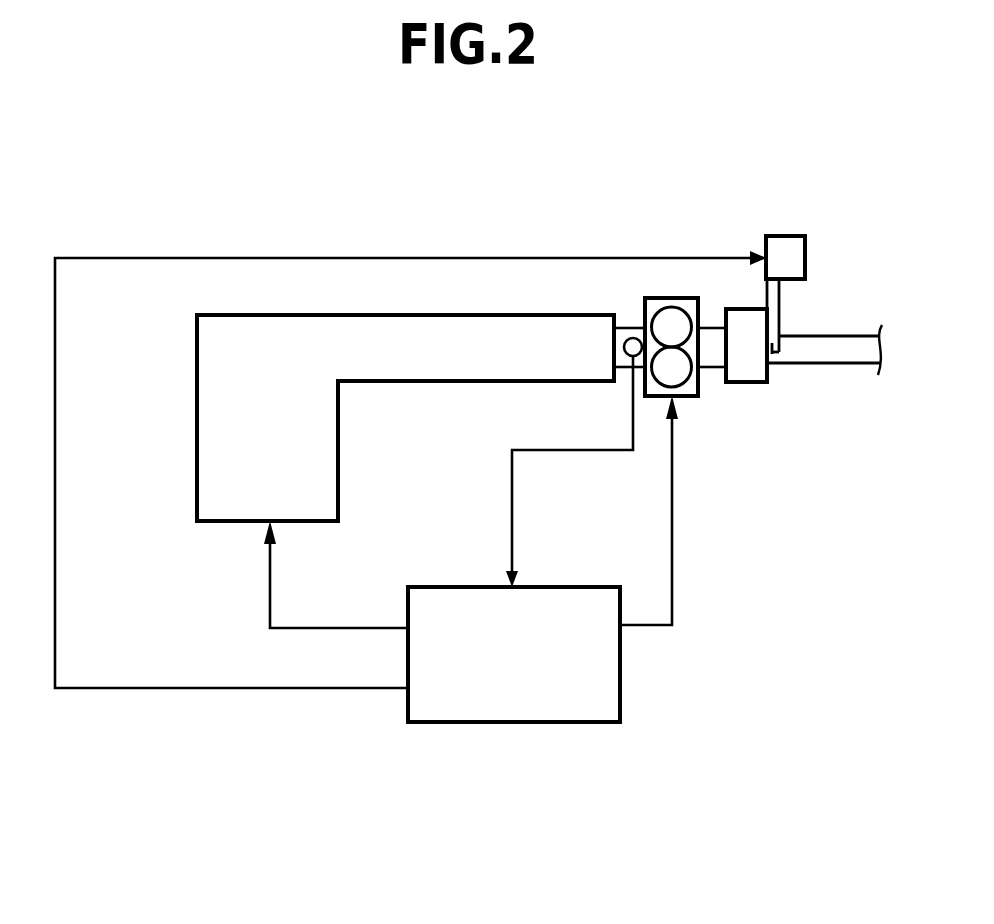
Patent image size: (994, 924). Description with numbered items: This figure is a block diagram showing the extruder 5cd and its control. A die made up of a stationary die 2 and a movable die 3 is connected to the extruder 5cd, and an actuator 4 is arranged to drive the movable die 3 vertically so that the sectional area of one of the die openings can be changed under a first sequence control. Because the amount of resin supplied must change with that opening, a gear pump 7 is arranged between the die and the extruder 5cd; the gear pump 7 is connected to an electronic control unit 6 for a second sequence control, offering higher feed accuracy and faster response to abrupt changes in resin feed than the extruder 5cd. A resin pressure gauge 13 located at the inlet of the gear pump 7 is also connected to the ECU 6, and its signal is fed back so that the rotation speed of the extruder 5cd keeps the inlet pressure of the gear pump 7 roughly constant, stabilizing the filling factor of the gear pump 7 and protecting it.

The stationary die 2 is at (748, 372).
The movable die 3 is at (770, 363).
The actuator 4 is at (795, 254).
The extruder 5cd is at (213, 412).
The electronic control unit (ECU) 6 is at (522, 713).
The gear pump 7 is at (671, 298).
The resin pressure gauge 13 is at (629, 337).